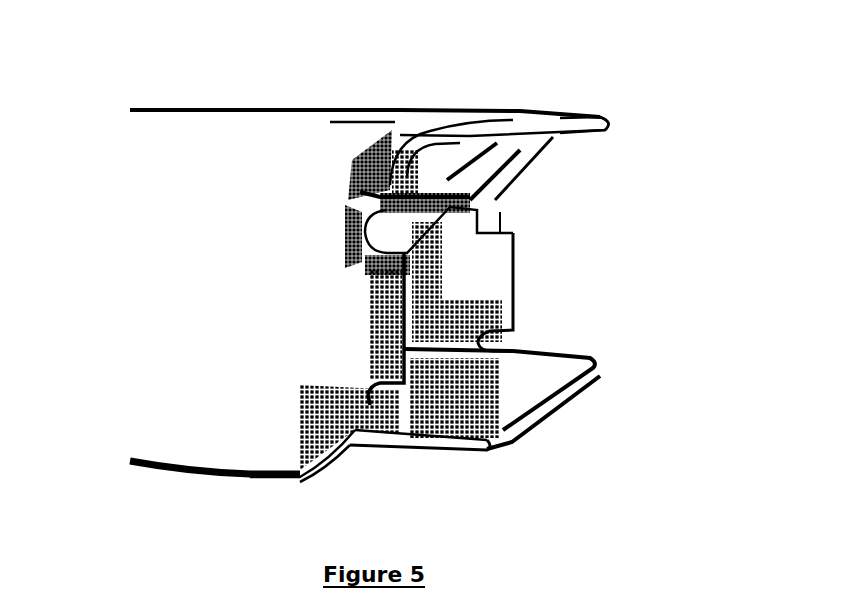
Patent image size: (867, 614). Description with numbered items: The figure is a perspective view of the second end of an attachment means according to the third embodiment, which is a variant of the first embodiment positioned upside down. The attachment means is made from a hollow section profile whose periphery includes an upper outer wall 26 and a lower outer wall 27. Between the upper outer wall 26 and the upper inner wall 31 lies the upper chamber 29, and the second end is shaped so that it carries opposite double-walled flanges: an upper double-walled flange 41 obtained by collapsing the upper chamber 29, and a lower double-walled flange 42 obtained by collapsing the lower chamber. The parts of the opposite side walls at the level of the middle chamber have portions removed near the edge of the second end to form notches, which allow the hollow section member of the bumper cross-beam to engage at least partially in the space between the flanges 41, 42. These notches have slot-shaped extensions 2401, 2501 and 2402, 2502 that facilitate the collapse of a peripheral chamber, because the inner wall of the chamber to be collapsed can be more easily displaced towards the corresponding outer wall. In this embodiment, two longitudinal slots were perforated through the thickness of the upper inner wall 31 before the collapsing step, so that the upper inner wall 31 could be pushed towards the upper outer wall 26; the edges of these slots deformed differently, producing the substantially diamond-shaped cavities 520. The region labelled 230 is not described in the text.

The upper outer wall 26 is at (168, 105).
The lower outer wall 27 is at (165, 468).
The upper chamber 29 is at (425, 173).
The upper inner wall 31 is at (418, 228).
The upper double-walled flange 41 is at (613, 127).
The lower double-walled flange 42 is at (575, 392).
The upper edge 230 is at (570, 115).
The diamond-shaped cavities 520 is at (465, 155).
The slot-shaped extension 2401 is at (388, 240).
The slot-shaped extension 2402 is at (402, 433).
The slot-shaped extension 2501 is at (495, 217).
The slot-shaped extension 2502 is at (490, 343).